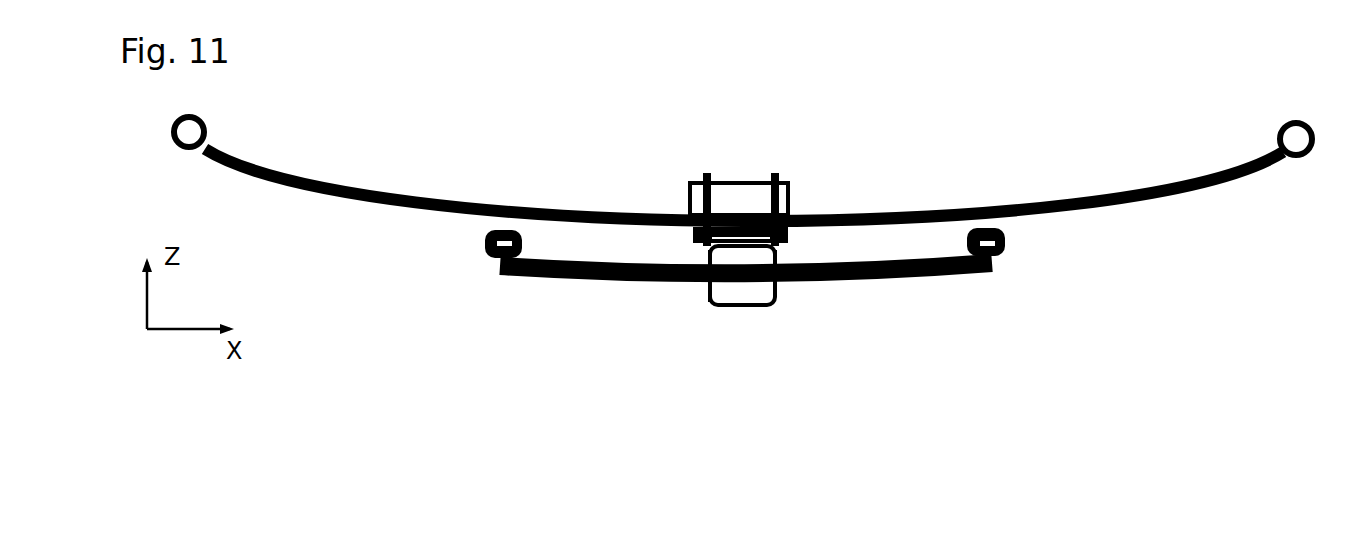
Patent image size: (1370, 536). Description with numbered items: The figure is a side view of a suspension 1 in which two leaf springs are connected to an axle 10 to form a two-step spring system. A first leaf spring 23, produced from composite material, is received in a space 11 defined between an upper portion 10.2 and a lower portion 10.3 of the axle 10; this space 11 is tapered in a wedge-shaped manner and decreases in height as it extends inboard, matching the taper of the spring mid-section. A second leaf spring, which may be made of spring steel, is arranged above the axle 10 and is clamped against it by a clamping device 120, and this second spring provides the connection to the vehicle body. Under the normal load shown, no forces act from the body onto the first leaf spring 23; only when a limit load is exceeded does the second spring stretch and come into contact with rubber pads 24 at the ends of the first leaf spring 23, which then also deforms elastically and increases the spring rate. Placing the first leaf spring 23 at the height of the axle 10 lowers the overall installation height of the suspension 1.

The suspension 1 is at (1208, 53).
The axle 10 is at (773, 301).
The upper portion of the axle 10.2 is at (782, 255).
The lower portion of the axle 10.3 is at (718, 303).
The space 11 is at (710, 260).
The first leaf spring 23 is at (915, 280).
The rubber pads 24 is at (485, 244).
The clamping device 120 is at (692, 167).